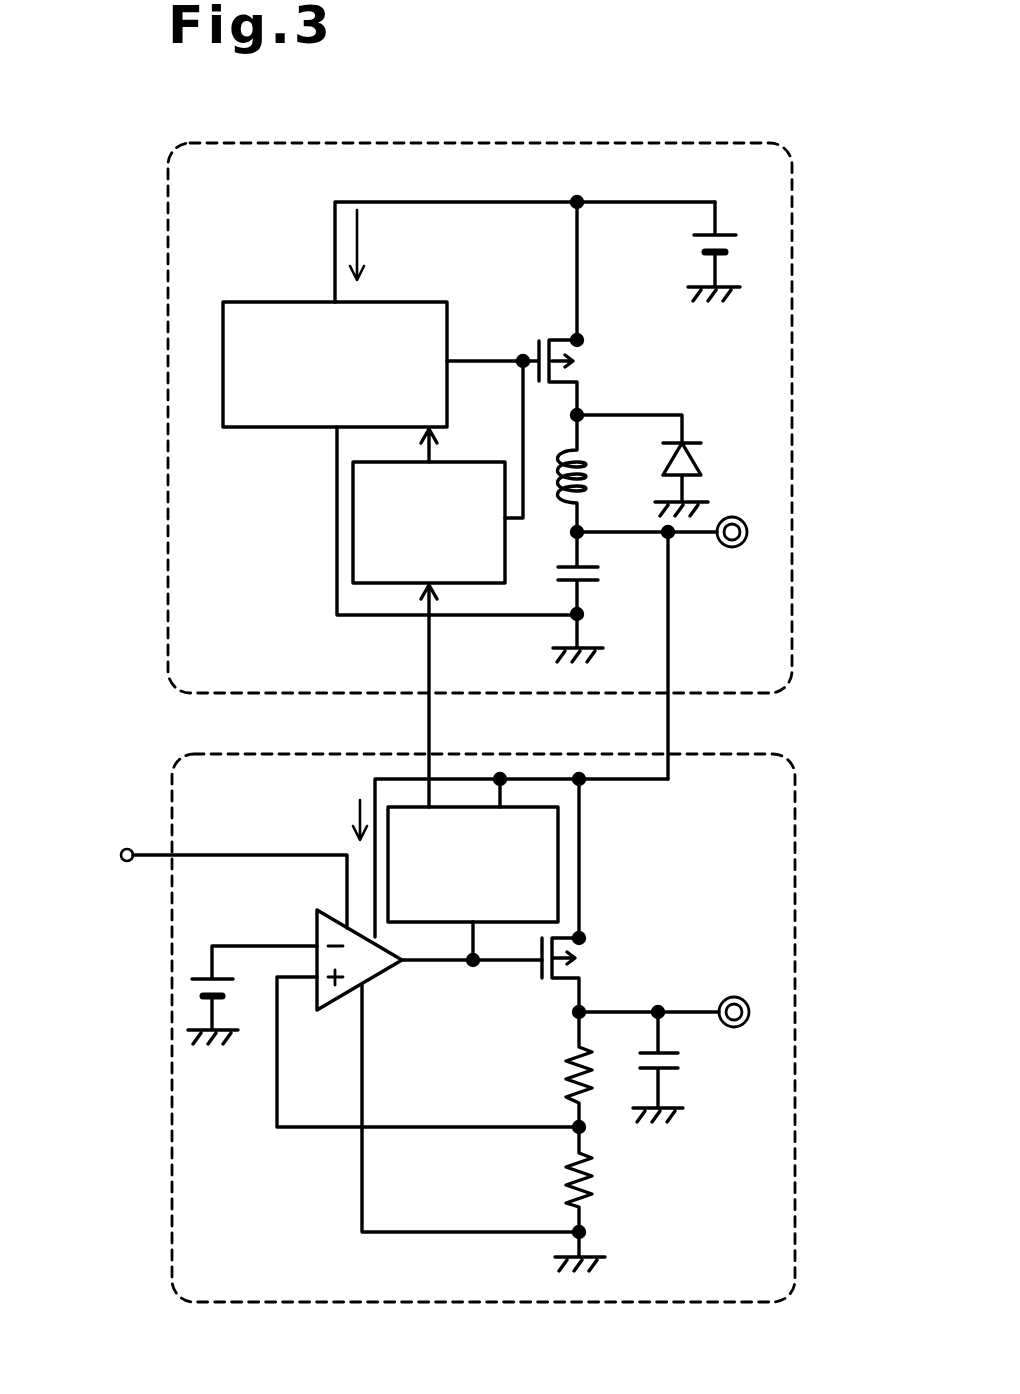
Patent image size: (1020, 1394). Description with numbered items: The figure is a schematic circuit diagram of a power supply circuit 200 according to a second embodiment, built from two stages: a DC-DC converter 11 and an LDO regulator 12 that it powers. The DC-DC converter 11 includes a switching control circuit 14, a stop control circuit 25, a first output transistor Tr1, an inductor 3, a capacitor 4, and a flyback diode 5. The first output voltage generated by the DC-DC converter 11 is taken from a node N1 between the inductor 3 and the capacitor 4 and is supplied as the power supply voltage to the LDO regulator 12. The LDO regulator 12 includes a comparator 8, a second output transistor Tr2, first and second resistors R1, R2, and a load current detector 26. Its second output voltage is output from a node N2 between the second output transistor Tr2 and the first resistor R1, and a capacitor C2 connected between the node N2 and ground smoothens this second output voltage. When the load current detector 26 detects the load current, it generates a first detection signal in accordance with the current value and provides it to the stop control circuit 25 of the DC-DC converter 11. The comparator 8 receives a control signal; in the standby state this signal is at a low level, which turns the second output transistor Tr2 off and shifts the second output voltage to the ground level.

The power supply circuit 200 is at (745, 87).
The DC-DC converter 11 is at (793, 188).
The LDO regulator 12 is at (796, 827).
The switching control circuit 14 is at (262, 302).
The stop control circuit 25 is at (353, 545).
The load current detector 26 is at (558, 850).
The inductor 3 is at (588, 456).
The capacitor 4 is at (600, 566).
The flyback diode 5 is at (694, 455).
The comparator 8 is at (375, 983).
The first output transistor Tr1 is at (575, 381).
The second output transistor Tr2 is at (580, 978).
The first resistor R1 is at (566, 1072).
The second resistor R2 is at (568, 1179).
The capacitor C2 is at (672, 1070).
The node N1 is at (577, 536).
The node N2 is at (574, 1013).